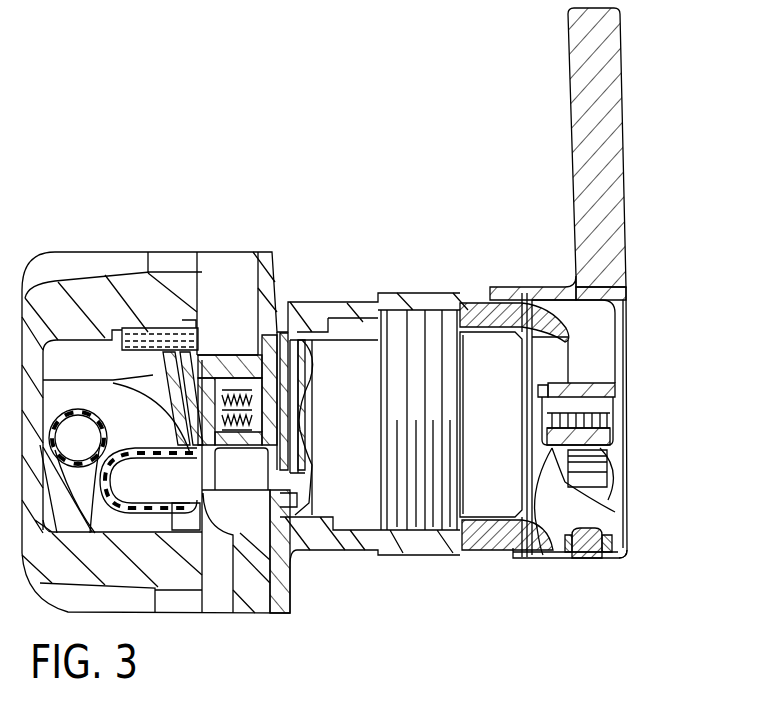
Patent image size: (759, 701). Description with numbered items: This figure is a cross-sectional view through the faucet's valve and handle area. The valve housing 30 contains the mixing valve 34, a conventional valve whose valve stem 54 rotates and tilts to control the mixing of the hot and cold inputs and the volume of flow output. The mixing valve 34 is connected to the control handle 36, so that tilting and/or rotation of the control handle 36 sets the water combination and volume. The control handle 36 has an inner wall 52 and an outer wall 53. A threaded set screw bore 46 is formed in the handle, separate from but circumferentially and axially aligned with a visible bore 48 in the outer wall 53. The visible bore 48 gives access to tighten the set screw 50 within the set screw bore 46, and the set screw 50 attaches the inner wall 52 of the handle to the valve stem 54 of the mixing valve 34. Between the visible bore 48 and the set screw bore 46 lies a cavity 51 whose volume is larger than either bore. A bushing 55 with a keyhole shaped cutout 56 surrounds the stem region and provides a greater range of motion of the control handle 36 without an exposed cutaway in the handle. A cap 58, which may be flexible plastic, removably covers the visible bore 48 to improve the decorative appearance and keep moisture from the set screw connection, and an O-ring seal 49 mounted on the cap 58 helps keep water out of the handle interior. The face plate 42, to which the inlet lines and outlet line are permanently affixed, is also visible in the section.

The valve housing 30 is at (276, 303).
The mixing valve 34 is at (348, 475).
The control handle 36 is at (623, 220).
The face plate 42 is at (184, 372).
The set screw bore 46 is at (567, 483).
The visible bore 48 is at (617, 540).
The O-ring seal 49 is at (598, 562).
The set screw 50 is at (590, 475).
The cavity 51 is at (595, 500).
The inner wall 52 is at (622, 450).
The outer wall 53 is at (542, 287).
The valve stem 54 is at (602, 403).
The bushing 55 is at (503, 303).
The keyhole shaped cutout 56 is at (548, 535).
The cap 58 is at (588, 562).